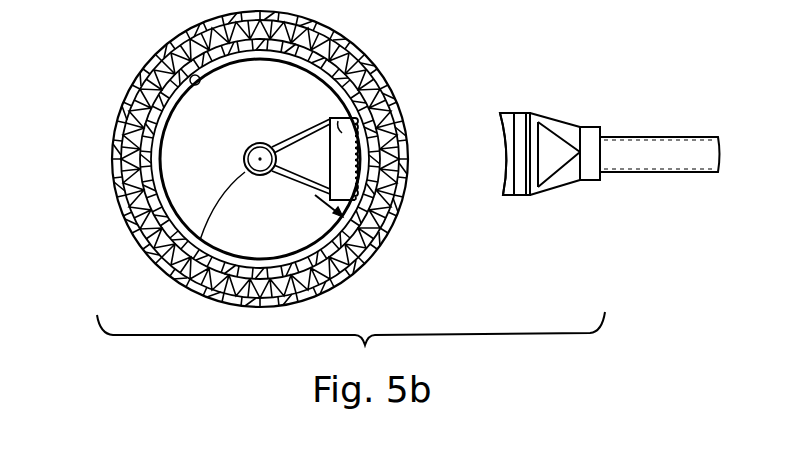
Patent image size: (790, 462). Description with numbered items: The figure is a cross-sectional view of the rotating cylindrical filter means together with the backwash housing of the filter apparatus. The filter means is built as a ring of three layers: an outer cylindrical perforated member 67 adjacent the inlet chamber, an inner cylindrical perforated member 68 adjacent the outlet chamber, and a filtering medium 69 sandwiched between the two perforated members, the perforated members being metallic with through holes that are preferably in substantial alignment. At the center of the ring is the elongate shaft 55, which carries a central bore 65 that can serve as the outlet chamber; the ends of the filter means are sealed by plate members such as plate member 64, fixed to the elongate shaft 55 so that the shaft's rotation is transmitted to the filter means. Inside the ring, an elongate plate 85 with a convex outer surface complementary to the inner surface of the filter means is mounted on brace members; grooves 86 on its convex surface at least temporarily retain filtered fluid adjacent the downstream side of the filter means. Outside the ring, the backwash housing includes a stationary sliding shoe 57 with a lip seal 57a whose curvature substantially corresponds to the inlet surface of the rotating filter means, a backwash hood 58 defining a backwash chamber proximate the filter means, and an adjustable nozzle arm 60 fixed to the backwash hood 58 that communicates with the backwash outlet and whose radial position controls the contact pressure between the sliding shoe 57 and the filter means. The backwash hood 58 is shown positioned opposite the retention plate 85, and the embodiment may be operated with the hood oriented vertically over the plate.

The elongate shaft 55 is at (177, 275).
The sliding shoe 57 is at (512, 113).
The lip seal 57a is at (500, 177).
The backwash hood 58 is at (570, 108).
The adjustable nozzle arm 60 is at (685, 135).
The plate member 64 is at (392, 247).
The central bore 65 is at (243, 157).
The cylindrical perforated member 67 is at (377, 75).
The cylindrical perforated member 68 is at (148, 72).
The filtering medium 69 is at (143, 225).
The elongate plate 85 is at (333, 117).
The grooves 86 is at (310, 190).